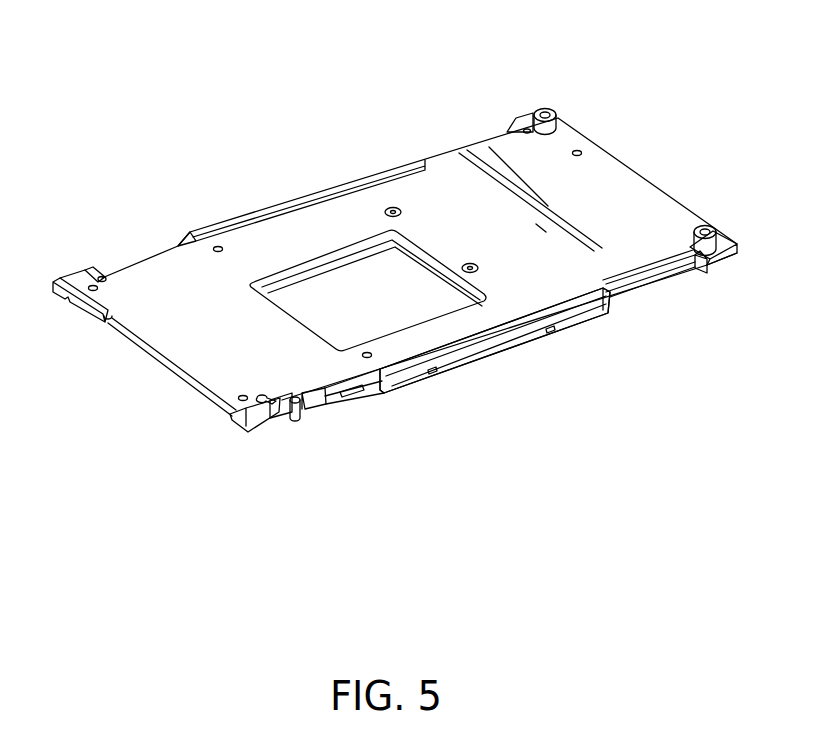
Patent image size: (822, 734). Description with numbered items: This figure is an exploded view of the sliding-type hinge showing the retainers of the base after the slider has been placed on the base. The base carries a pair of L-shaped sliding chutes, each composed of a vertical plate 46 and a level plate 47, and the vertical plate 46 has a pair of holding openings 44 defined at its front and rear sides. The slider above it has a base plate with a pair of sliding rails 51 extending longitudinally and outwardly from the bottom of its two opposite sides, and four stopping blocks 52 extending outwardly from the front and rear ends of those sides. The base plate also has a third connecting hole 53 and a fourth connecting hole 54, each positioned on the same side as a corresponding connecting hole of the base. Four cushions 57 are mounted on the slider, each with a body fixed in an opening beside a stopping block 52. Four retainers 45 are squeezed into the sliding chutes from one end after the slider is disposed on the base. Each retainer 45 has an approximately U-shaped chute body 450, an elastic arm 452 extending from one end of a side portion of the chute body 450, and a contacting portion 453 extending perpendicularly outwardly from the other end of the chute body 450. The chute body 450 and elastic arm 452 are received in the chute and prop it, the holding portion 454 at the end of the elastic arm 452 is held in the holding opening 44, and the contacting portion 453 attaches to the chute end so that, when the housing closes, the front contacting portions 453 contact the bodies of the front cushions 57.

The holding opening 44 is at (550, 333).
The retainer 45 is at (181, 231).
The vertical plate 46 is at (463, 360).
The level plate 47 is at (497, 330).
The sliding rail 51 is at (660, 285).
The stopping block 52 is at (63, 280).
The third connecting hole 53 is at (471, 263).
The fourth connecting hole 54 is at (385, 210).
The cushion 57 is at (92, 263).
The chute body 450 is at (268, 398).
The elastic arm 452 is at (338, 398).
The contacting portion 453 is at (305, 392).
The holding portion 454 is at (357, 395).